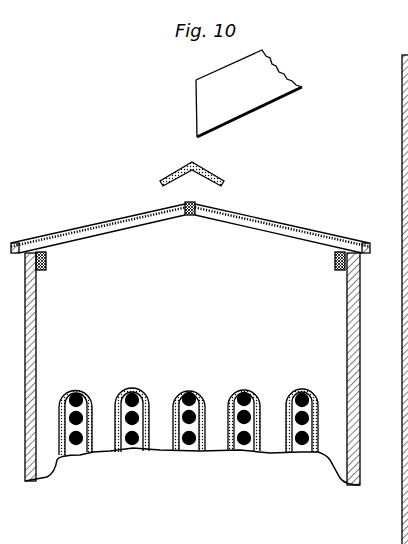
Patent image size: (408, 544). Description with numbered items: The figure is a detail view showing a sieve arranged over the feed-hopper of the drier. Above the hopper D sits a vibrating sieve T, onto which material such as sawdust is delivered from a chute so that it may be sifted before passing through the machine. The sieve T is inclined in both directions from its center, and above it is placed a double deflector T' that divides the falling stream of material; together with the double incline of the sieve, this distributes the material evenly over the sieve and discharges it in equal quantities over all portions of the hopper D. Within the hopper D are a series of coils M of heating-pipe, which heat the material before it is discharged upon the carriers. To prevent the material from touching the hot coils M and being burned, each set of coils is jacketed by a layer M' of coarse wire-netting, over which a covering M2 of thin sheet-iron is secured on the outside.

The vibrating sieve T is at (190, 227).
The double deflector T' is at (196, 174).
The hopper D is at (185, 297).
The coils of heating-pipe M is at (86, 423).
The layer of coarse wire-netting M' is at (204, 417).
The covering of thin sheet-iron M2 is at (71, 382).